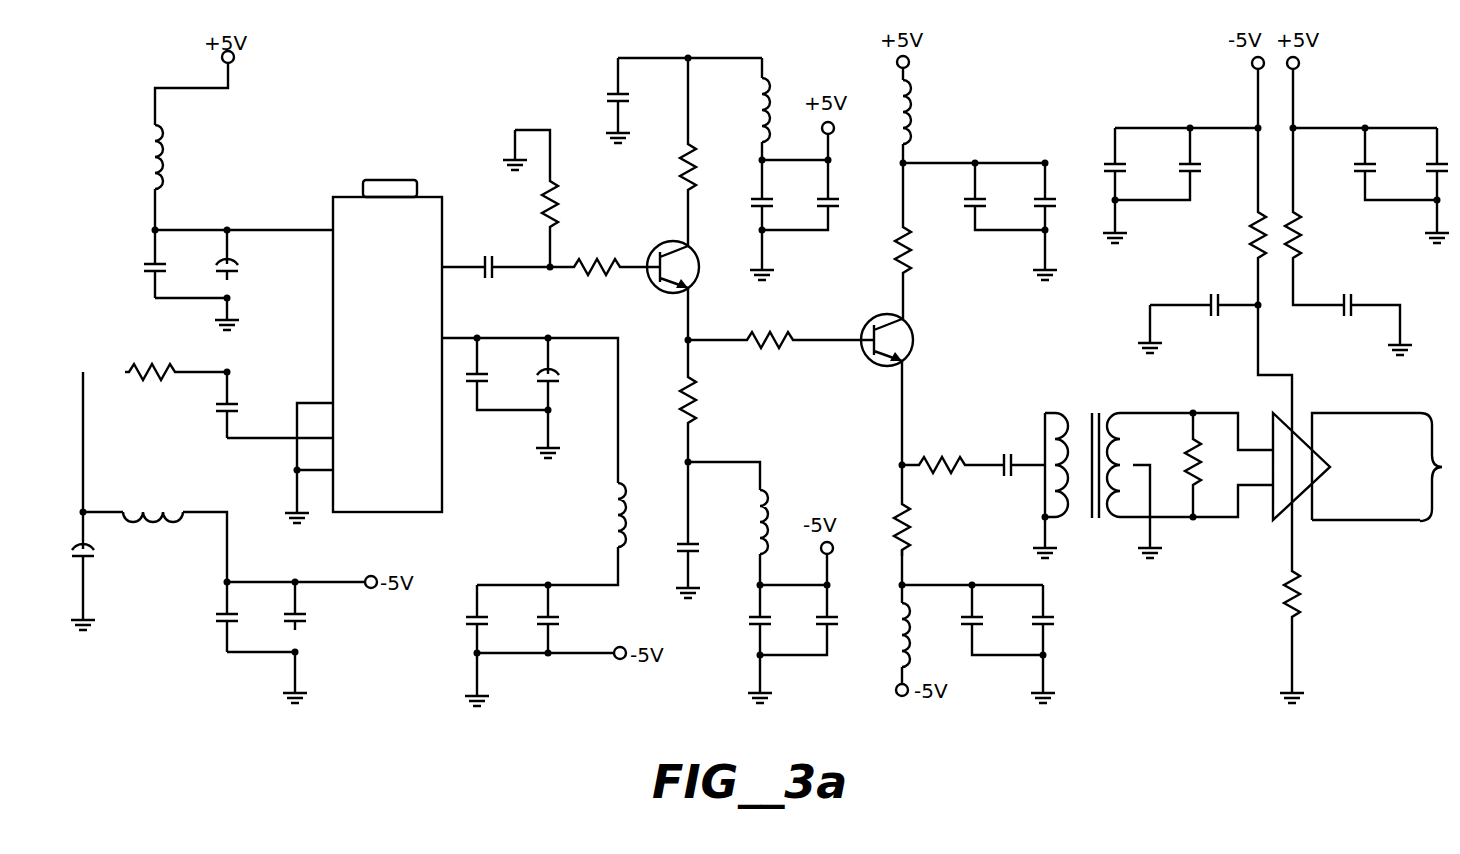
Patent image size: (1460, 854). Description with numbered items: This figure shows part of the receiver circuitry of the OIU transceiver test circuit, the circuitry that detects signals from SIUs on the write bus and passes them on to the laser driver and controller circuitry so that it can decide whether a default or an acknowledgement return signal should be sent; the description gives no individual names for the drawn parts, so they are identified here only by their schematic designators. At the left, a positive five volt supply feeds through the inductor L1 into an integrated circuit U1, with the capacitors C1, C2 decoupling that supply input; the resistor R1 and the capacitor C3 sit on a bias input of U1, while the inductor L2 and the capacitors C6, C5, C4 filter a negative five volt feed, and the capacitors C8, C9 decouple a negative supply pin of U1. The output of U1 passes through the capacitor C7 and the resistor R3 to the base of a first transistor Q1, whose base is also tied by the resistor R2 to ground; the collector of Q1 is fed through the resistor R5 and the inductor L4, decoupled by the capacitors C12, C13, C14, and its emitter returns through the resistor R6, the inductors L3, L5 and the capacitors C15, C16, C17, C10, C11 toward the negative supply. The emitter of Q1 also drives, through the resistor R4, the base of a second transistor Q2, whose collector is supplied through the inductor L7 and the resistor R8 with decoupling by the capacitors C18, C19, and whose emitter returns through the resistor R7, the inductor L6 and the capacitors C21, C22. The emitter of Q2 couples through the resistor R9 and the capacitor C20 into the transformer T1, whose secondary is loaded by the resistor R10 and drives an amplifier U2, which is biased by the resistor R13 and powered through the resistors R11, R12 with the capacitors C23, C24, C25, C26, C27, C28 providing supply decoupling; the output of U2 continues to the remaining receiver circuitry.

The regulator/integrated circuit U1 is at (387, 328).
The inductor L1 20 µH L1 is at (188, 157).
The capacitor C1 0.1 C1 is at (142, 266).
The capacitor C2 100 µF C2 is at (255, 266).
The resistor R1 10K R1 is at (176, 395).
The capacitor C3 0.1 C3 is at (241, 402).
The inductor L2 1.2 µH L2 is at (154, 486).
The capacitor C6 100 µF C6 is at (111, 553).
The capacitor C5 22 µF C5 is at (200, 617).
The capacitor C4 0.1 C4 is at (309, 617).
The capacitor C12 0.1 C12 is at (599, 91).
The resistor R5 10 R5 is at (671, 166).
The inductor L4 20 µH L4 is at (731, 110).
The capacitor C13 22 µF C13 is at (780, 193).
The capacitor C14 0.1 C14 is at (844, 193).
The resistor R2 2.2K R2 is at (574, 203).
The capacitor C7 0.1 C7 is at (492, 268).
The resistor R3 10 R3 is at (598, 269).
The transistor Q1 is at (673, 285).
The resistor R4 10 R4 is at (771, 366).
The resistor R6 100 R6 is at (665, 403).
The inductor L5 20 µH L5 is at (730, 514).
The capacitor C15 0.1 C15 is at (674, 549).
The capacitor C16 0.1 C16 is at (744, 617).
The capacitor C17 22 µF C17 is at (805, 620).
The capacitor C8 0.1 C8 is at (491, 371).
The capacitor C9 10 µF C9 is at (568, 372).
The inductor L3 20 µH L3 is at (581, 511).
The capacitor C10 0.1 C10 is at (461, 617).
The capacitor C11 22 µF C11 is at (569, 620).
The inductor L7 20 µH L7 is at (935, 111).
The capacitor C18 0.1 C18 is at (959, 195).
The capacitor C19 22 µF C19 is at (1020, 196).
The resistor R8 10 R8 is at (883, 252).
The transistor Q2 is at (902, 340).
The resistor R9 27 R9 is at (943, 438).
The capacitor C20 2200 pF C20 is at (991, 464).
The resistor R7 100 R7 is at (921, 528).
The inductor L6 20 µH L6 is at (929, 635).
The capacitor C21 0.1 C21 is at (987, 619).
The capacitor C22 22 µF C22 is at (1063, 621).
The transformer T1 is at (1089, 448).
The resistor R10 220 R10 is at (1167, 453).
The amplifier U2 is at (1357, 467).
The resistor R13 510 R13 is at (1263, 602).
The resistor R11 10 R11 is at (1234, 236).
The resistor R12 10 R12 is at (1313, 236).
The capacitor C25 0.1 C25 is at (1205, 332).
The capacitor C26 0.1 C26 is at (1343, 332).
The capacitor C23 22 µF C23 is at (1134, 162).
The capacitor C24 0.1 C24 is at (1206, 162).
The capacitor C27 0.1 C27 is at (1347, 162).
The capacitor C28 22 µF C28 is at (1415, 163).